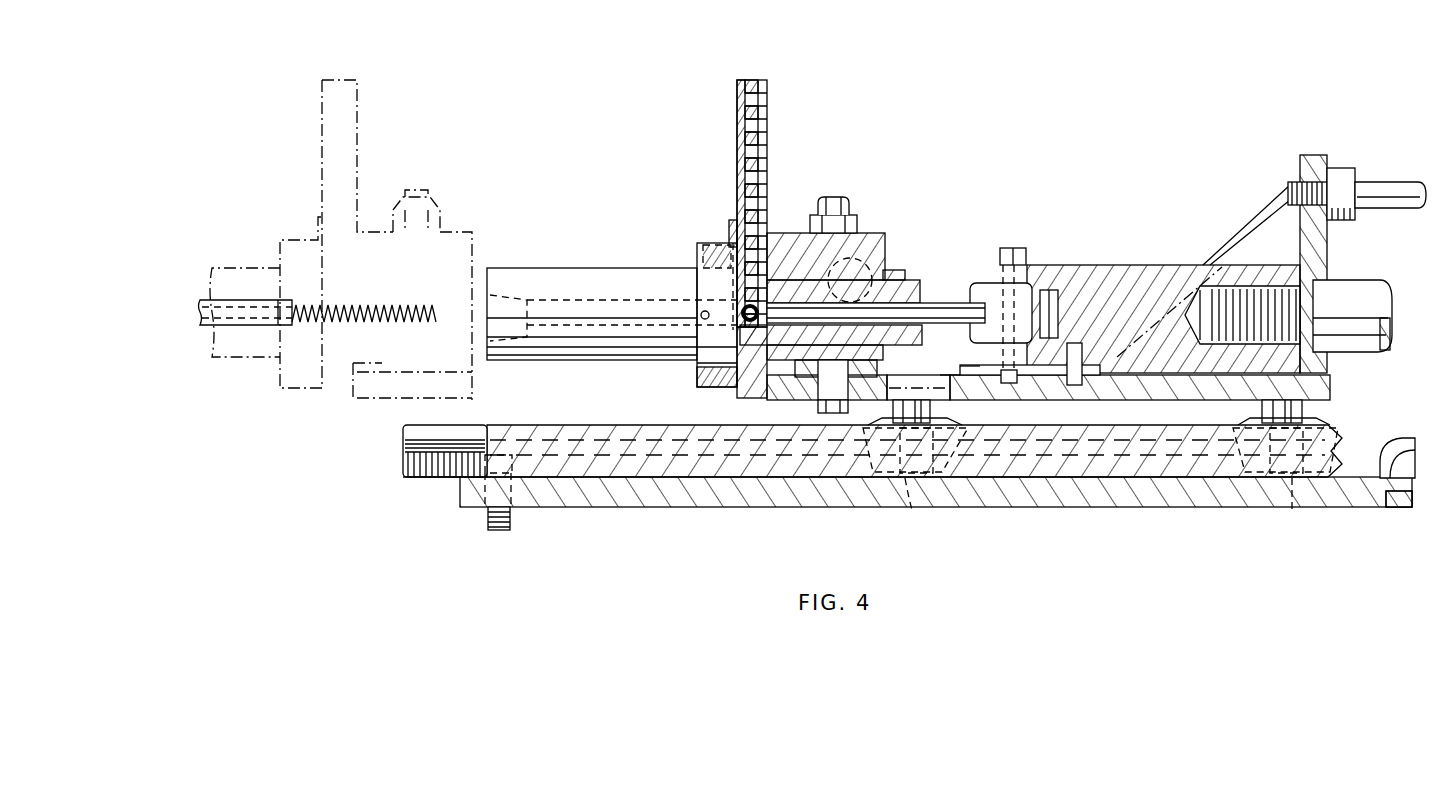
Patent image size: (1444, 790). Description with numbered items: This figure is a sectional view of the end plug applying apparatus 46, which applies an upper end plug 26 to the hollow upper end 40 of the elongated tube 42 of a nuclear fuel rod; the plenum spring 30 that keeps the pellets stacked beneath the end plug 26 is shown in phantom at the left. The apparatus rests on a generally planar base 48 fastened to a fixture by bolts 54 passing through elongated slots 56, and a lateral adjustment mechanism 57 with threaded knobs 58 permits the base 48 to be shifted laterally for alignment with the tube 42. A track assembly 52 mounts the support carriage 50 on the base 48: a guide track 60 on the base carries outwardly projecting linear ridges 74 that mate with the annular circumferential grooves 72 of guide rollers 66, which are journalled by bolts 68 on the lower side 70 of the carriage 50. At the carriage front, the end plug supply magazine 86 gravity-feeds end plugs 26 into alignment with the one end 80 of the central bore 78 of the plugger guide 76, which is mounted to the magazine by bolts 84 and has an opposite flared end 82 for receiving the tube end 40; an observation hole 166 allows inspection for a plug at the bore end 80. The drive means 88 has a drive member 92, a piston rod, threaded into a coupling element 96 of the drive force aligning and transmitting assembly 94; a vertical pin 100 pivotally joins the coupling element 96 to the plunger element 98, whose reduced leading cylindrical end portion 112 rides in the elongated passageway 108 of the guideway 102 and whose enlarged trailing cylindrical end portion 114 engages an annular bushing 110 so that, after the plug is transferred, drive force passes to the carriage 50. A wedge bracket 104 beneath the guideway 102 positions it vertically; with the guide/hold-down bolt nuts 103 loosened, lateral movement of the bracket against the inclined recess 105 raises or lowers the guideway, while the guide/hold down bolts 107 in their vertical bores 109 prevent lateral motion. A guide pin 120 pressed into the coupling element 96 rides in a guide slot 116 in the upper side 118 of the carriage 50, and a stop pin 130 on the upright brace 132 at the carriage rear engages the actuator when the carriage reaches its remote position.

The upper end plug 26 is at (755, 177).
The plenum spring 30 is at (375, 323).
The upper end 40 is at (292, 326).
The elongated tube 42 is at (248, 327).
The end plug applying apparatus 46 is at (1092, 86).
The base 48 is at (605, 480).
The support carriage 50 is at (1142, 402).
The track assembly 52 is at (750, 495).
The bolts 54 is at (488, 520).
The elongated slots 56 is at (525, 500).
The lateral adjustment mechanism 57 is at (1400, 512).
The threaded knobs 58 is at (1402, 437).
The guide track 60 is at (412, 479).
The guide rollers 66 is at (972, 480).
The bolts 68 is at (1098, 506).
The lower side 70 is at (1028, 377).
The annular circumferential groove 72 is at (968, 427).
The linear ridge 74 is at (462, 425).
The plugger guide 76 is at (503, 262).
The central bore 78 is at (560, 300).
The one end 80 is at (698, 355).
The flared end 82 is at (480, 300).
The bolts 84 is at (697, 262).
The end plug supply magazine 86 is at (770, 105).
The drive means 88 is at (1374, 263).
The drive member 92 is at (1386, 281).
The drive force aligning and transmitting assembly 94 is at (1062, 262).
The coupling element 96 is at (1118, 265).
The plunger element 98 is at (941, 303).
The vertical pin 100 is at (1012, 249).
The guideway 102 is at (886, 232).
The guide/hold-down bolt nuts 103 is at (803, 232).
The wedge bracket 104 is at (800, 396).
The inclined recess 105 is at (831, 380).
The guide/hold down bolts 107 is at (833, 196).
The elongated passageway 108 is at (852, 286).
The vertical bores 109 is at (873, 232).
The annular bushing 110 is at (900, 283).
The leading cylindrical end portion 112 is at (766, 240).
The trailing cylindrical end portion 114 is at (990, 284).
The guide slot 116 is at (976, 367).
The upper side 118 is at (946, 372).
The guide pin 120 is at (1082, 386).
The stop pin 130 is at (1396, 181).
The upright brace 132 is at (1326, 262).
The observation hole 166 is at (701, 314).